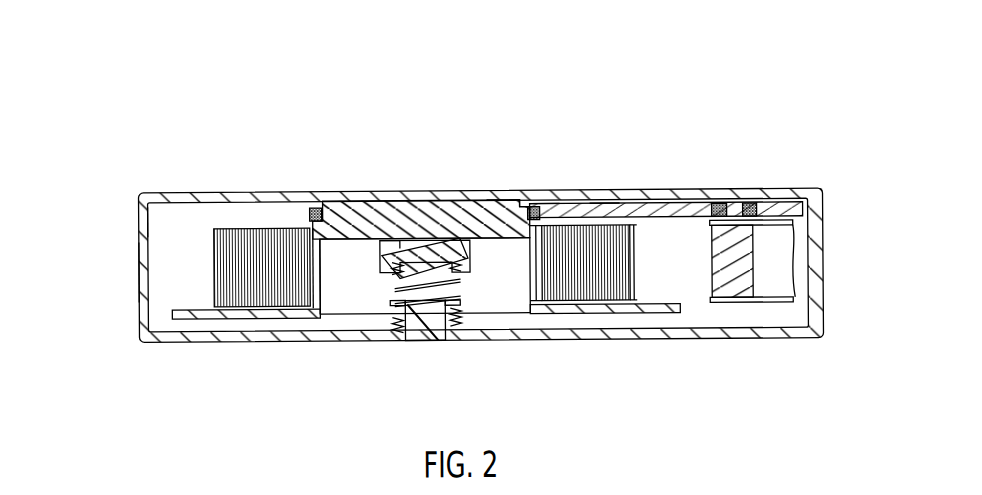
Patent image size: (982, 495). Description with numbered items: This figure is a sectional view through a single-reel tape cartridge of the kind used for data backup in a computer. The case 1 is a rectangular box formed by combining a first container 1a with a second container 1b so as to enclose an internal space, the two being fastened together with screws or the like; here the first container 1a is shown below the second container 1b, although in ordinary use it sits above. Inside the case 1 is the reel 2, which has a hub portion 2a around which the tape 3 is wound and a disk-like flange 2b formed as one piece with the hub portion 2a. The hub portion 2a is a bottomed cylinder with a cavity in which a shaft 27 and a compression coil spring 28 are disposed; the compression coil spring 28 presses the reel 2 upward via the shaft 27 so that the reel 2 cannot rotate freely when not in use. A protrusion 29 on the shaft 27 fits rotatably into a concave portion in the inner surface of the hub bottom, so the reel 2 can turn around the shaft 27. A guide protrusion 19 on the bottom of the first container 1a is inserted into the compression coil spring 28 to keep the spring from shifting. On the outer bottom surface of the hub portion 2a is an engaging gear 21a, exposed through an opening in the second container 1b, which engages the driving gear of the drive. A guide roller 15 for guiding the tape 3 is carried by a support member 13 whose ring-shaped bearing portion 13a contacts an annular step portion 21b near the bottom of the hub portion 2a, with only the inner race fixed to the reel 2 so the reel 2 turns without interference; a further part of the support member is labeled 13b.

The case 1 is at (162, 157).
The first container 1a is at (139, 301).
The second container 1b is at (139, 232).
The reel 2 is at (487, 131).
The hub portion 2a is at (322, 258).
The flange 2b is at (205, 302).
The engaging gear 21a is at (517, 205).
The annular step portion 21b is at (528, 210).
The tape 3 is at (243, 228).
The support member 13 is at (630, 131).
The bearing portion 13a is at (548, 207).
The second plate portion 13b is at (598, 207).
The guide roller 15 is at (732, 272).
The guide protrusion 19 is at (415, 330).
The shaft 27 is at (470, 262).
The compression coil spring 28 is at (455, 296).
The protrusion 29 is at (400, 245).